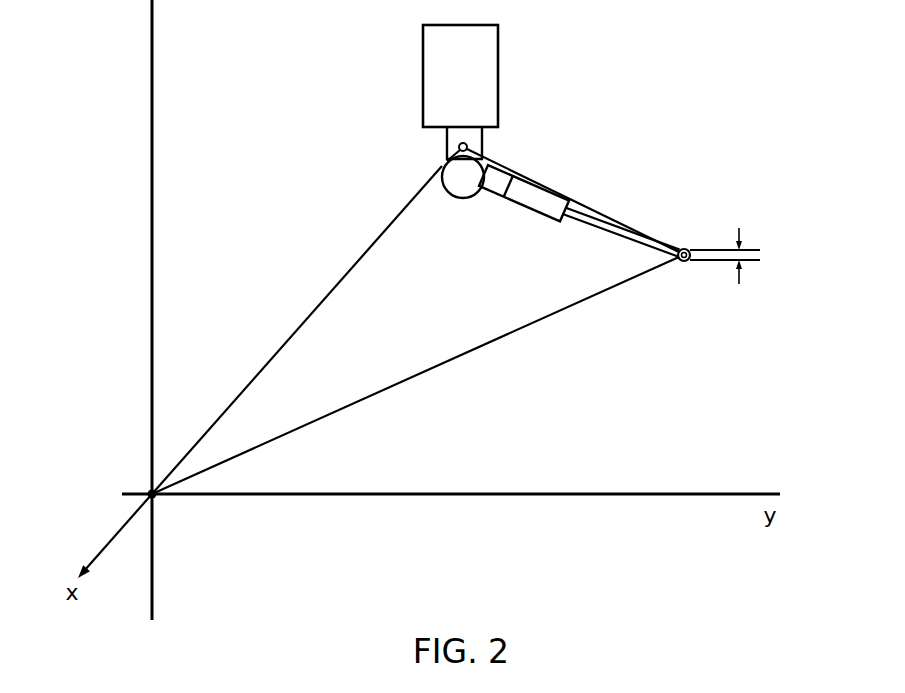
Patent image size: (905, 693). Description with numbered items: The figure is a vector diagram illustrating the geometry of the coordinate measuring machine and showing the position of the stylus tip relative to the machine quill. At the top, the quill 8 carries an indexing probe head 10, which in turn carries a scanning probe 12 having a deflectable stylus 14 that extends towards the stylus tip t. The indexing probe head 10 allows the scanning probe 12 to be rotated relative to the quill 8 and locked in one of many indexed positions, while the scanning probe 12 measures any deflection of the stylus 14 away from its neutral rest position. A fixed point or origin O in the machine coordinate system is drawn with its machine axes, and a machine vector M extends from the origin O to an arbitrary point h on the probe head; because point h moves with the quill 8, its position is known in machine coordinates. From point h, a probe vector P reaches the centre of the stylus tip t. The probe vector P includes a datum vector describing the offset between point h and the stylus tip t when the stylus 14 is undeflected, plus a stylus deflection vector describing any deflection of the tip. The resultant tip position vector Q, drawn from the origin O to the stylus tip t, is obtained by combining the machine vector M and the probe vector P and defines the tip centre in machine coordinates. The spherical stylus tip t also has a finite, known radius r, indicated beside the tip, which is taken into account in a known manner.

The quill 8 is at (468, 85).
The indexing probe head 10 is at (446, 198).
The scanning probe 12 is at (524, 218).
The deflectable stylus 14 is at (594, 234).
The arbitrary point on the probe head h is at (467, 145).
The probe vector P is at (531, 176).
The machine vector M is at (343, 326).
The resultant tip position vector Q is at (490, 382).
The origin O is at (96, 530).
The stylus tip t is at (730, 254).
The stylus tip radius r is at (731, 255).